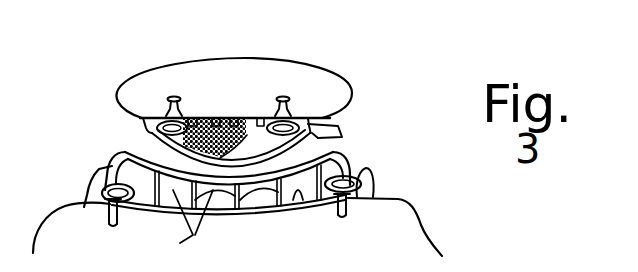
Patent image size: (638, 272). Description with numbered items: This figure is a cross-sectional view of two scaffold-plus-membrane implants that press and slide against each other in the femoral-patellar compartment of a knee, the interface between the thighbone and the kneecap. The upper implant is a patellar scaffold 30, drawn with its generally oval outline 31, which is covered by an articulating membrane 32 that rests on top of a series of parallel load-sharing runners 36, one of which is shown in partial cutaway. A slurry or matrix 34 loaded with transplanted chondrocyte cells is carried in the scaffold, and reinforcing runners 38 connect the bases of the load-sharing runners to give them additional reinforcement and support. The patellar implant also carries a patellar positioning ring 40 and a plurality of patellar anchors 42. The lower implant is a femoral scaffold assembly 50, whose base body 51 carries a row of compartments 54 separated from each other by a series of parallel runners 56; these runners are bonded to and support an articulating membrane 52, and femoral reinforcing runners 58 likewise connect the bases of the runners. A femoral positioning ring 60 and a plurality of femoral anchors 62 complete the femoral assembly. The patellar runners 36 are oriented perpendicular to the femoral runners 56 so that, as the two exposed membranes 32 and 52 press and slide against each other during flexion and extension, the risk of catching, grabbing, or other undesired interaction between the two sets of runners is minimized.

The patellar scaffold 30 is at (113, 131).
The mounting plate 31 is at (147, 73).
The articulating membrane 32 is at (342, 140).
The slurry or matrix 34 is at (203, 118).
The load-sharing runners 36 is at (247, 135).
The reinforcing runners 38 is at (262, 132).
The patellar positioning ring 40 is at (340, 130).
The patellar anchors 42 is at (286, 98).
The femoral scaffold assembly 50 is at (63, 179).
The base body 51 is at (55, 210).
The articulating membrane 52 is at (337, 150).
The compartments 54 is at (177, 221).
The runners 56 is at (242, 207).
The reinforcing runners 58 is at (300, 207).
The femoral positioning ring 60 is at (372, 178).
The femoral anchors 62 is at (358, 213).